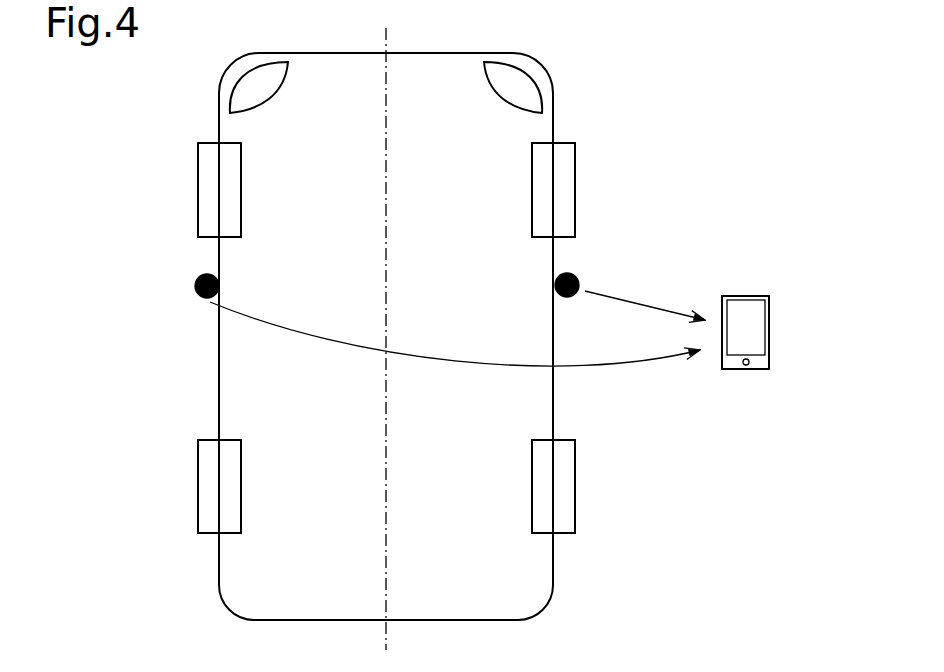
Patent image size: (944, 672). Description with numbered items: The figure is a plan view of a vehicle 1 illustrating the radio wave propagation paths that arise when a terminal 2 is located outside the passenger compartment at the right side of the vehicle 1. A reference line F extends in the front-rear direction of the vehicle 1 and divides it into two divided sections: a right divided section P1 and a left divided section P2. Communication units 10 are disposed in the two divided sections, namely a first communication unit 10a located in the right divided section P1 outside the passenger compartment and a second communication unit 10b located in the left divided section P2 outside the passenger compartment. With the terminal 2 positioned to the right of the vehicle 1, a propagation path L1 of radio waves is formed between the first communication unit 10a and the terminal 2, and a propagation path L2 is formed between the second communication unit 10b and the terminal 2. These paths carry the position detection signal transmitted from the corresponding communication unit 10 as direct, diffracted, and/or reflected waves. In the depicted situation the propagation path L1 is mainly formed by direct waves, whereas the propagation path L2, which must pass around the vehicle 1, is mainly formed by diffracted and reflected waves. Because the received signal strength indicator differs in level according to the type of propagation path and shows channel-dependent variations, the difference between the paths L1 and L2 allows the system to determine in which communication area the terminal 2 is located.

The vehicle 1 is at (548, 70).
The terminal 2 is at (771, 313).
The communication units 10 is at (372, 266).
The first communication unit 10a is at (578, 274).
The second communication unit 10b is at (197, 280).
The reference line F is at (386, 37).
The propagation path L1 is at (682, 312).
The propagation path L2 is at (624, 367).
The right divided section P1 is at (515, 600).
The left divided section P2 is at (256, 600).